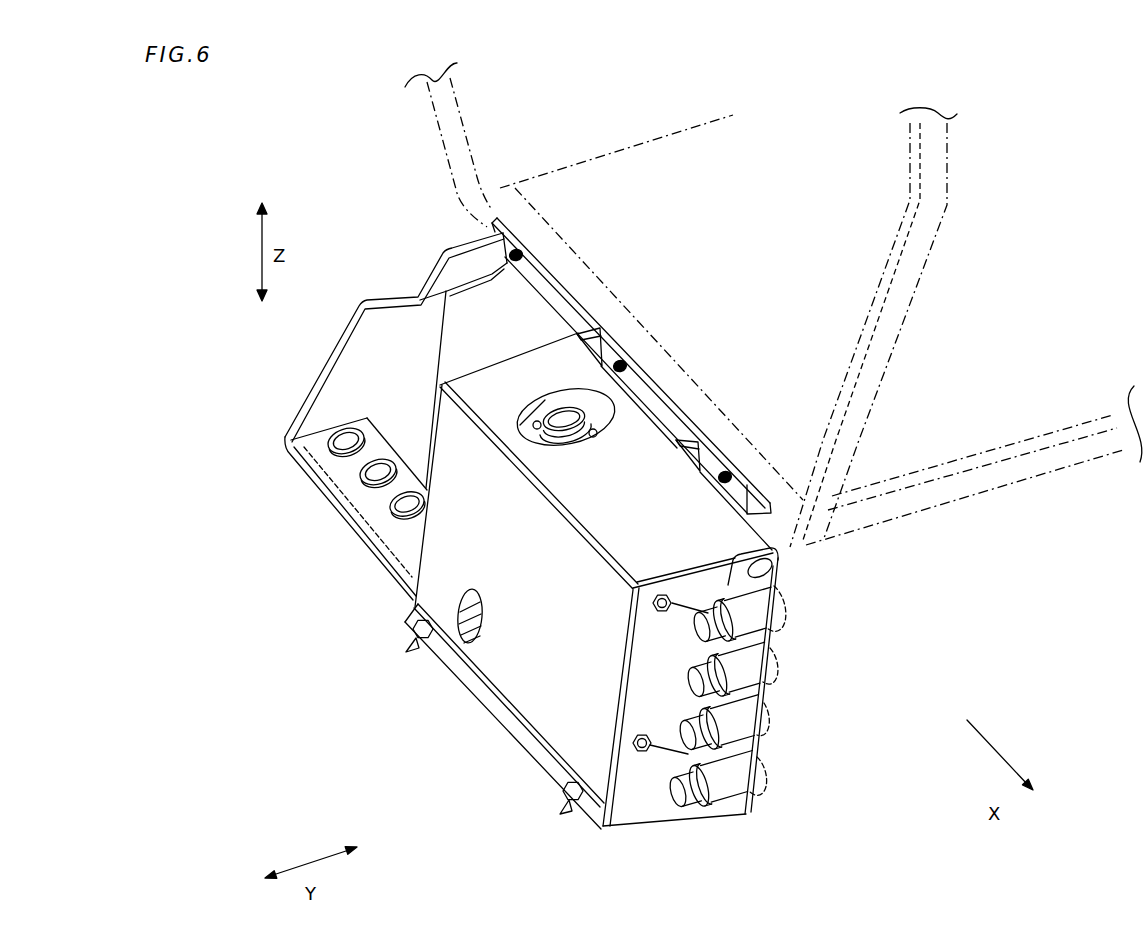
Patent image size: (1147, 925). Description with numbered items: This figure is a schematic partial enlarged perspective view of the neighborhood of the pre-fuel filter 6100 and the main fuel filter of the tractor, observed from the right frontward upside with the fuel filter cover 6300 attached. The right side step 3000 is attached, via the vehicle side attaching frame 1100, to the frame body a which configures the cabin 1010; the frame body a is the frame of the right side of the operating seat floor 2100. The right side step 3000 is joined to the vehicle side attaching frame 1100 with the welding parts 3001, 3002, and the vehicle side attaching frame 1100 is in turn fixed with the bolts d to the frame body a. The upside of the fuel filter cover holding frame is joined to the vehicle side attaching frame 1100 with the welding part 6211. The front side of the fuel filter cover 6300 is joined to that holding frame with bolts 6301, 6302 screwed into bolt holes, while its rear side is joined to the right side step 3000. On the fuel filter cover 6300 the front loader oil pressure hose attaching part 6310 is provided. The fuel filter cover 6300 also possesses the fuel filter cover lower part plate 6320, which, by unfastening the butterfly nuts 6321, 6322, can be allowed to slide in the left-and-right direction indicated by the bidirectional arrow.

The operating seat floor 2100 is at (805, 224).
The cabin 1010 is at (947, 198).
The vehicle side attaching frame 1100 is at (549, 262).
The right side step 3000 is at (352, 514).
The welding part 3001 is at (601, 332).
The welding part 3002 is at (513, 233).
The pre-fuel filter 6100 is at (552, 405).
The welding part 6211 is at (700, 447).
The fuel filter cover 6300 is at (647, 818).
The bolt 6301 is at (735, 631).
The bolt 6302 is at (722, 768).
The front loader oil pressure hose attaching part 6310 is at (742, 818).
The fuel filter cover lower part plate 6320 is at (475, 697).
The butterfly nut 6321 is at (562, 795).
The butterfly nut 6322 is at (411, 629).
The frame body a is at (682, 382).
The bolt d is at (507, 260).